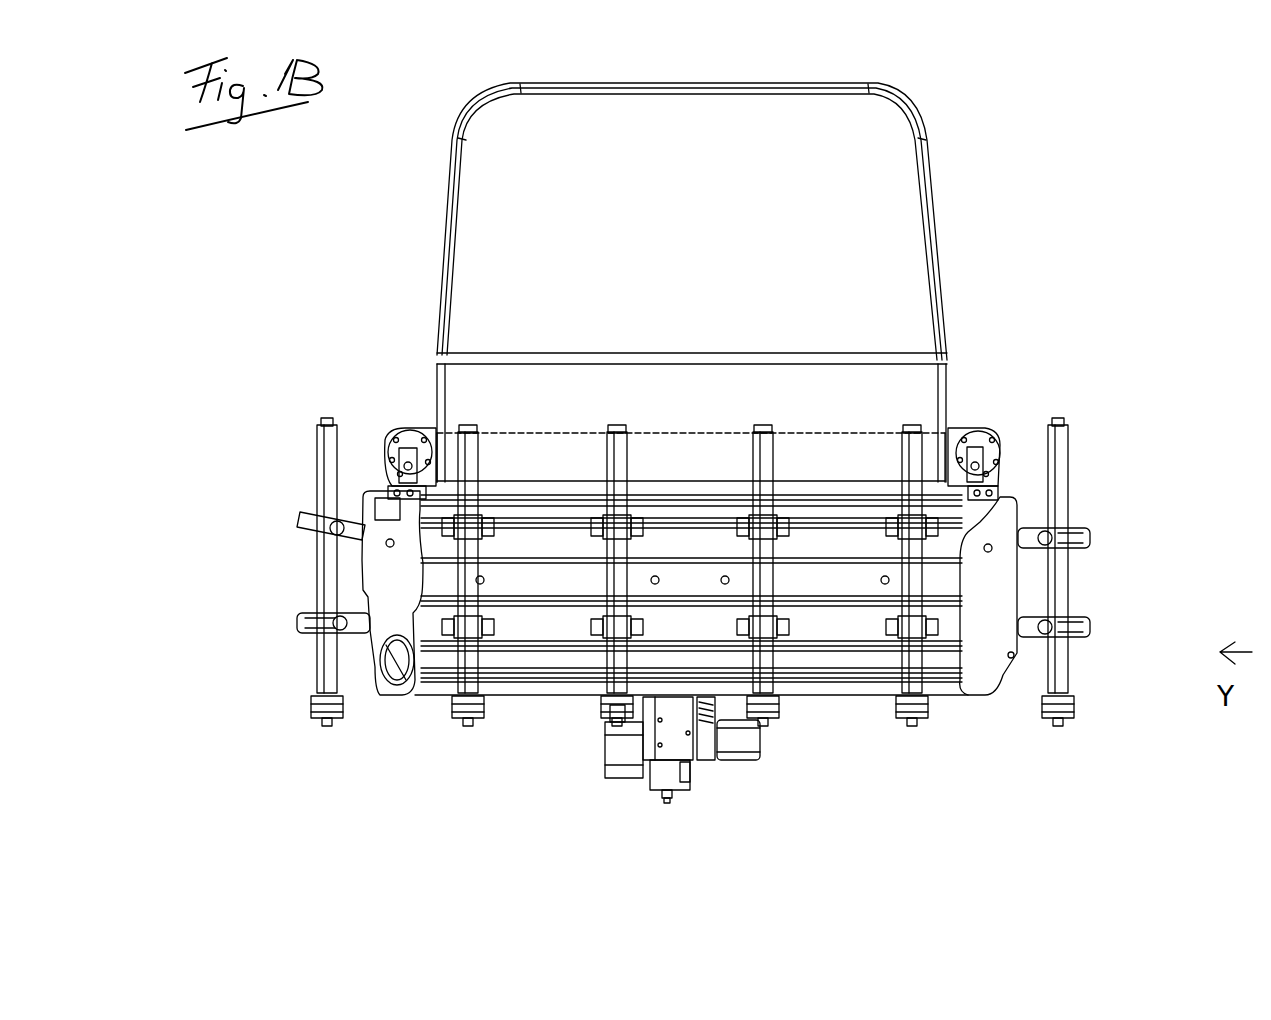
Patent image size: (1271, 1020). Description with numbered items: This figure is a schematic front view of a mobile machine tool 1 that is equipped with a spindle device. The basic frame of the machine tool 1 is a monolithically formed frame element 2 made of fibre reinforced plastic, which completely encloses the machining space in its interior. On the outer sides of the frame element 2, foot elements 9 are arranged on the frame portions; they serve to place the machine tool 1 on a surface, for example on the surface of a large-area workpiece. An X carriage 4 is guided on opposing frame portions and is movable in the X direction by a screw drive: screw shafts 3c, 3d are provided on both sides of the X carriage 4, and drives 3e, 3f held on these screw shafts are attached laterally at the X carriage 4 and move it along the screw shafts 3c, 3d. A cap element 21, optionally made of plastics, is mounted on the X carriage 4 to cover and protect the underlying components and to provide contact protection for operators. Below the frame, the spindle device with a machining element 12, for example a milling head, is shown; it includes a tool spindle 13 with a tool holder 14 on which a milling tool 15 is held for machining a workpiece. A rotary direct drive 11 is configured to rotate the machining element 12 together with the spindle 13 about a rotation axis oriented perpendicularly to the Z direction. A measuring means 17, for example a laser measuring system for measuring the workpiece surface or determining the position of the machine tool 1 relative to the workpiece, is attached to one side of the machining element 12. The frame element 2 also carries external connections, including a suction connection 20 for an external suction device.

The machine tool 1 is at (1022, 214).
The frame element 2 is at (380, 578).
The screw shaft 3c is at (385, 450).
The screw shaft 3d is at (978, 462).
The drive 3e is at (405, 432).
The drive 3f is at (975, 440).
The X carriage 4 is at (855, 455).
The foot element 9 is at (322, 560).
The rotary direct drive 11 is at (738, 748).
The machining element 12 is at (680, 748).
The tool spindle 13 is at (655, 772).
The tool holder 14 is at (665, 795).
The milling tool 15 is at (664, 792).
The measuring means 17 is at (622, 740).
The suction connection 20 is at (385, 665).
The cap element 21 is at (888, 145).